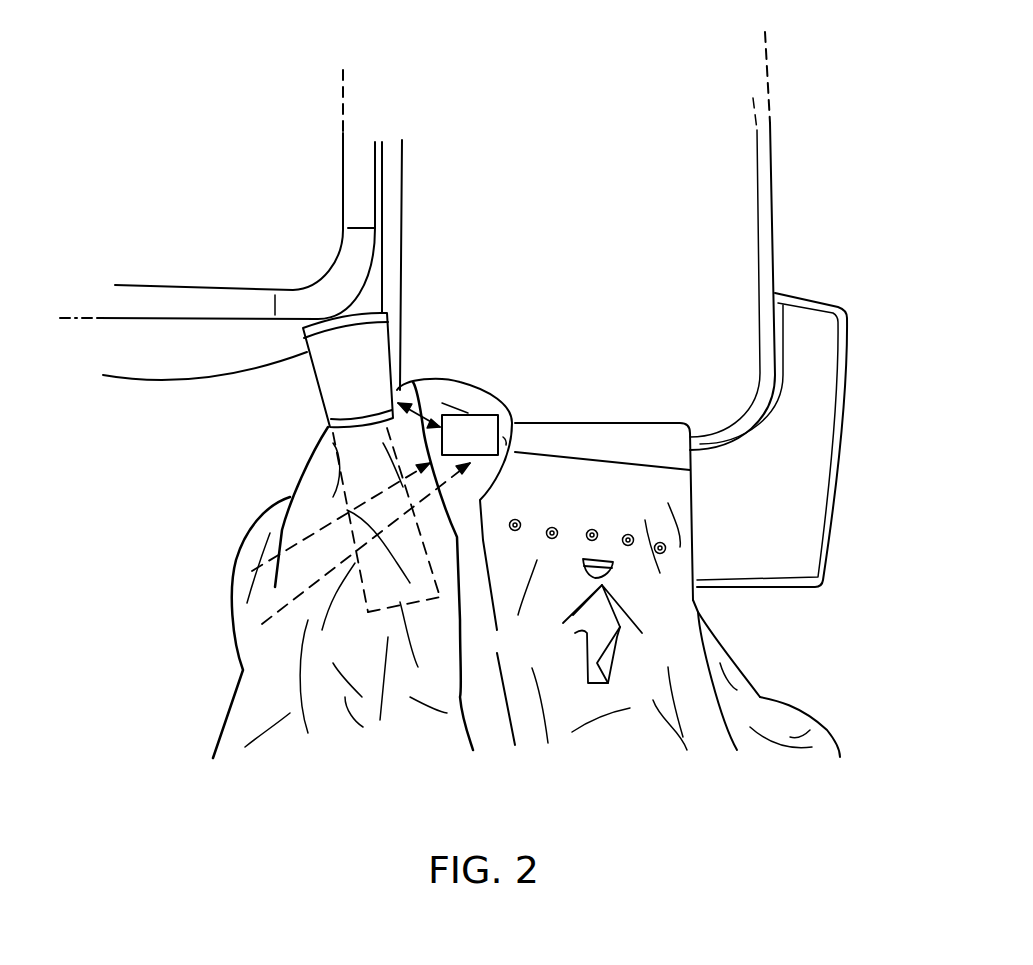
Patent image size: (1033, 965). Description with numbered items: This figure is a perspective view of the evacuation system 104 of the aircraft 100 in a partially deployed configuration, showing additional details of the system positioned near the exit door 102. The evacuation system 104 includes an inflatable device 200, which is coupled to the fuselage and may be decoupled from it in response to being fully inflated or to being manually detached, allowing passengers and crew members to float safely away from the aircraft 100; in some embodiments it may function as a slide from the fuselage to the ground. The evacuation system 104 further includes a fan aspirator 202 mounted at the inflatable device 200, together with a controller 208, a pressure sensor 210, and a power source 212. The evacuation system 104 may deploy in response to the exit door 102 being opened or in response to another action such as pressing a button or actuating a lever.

The aircraft 100 is at (252, 117).
The exit door 102 is at (773, 160).
The evacuation system 104 is at (153, 513).
The inflatable device 200 is at (488, 727).
The fan aspirator 202 is at (380, 367).
The controller 208 is at (253, 570).
The pressure sensor 210 is at (263, 623).
The power source 212 is at (488, 449).